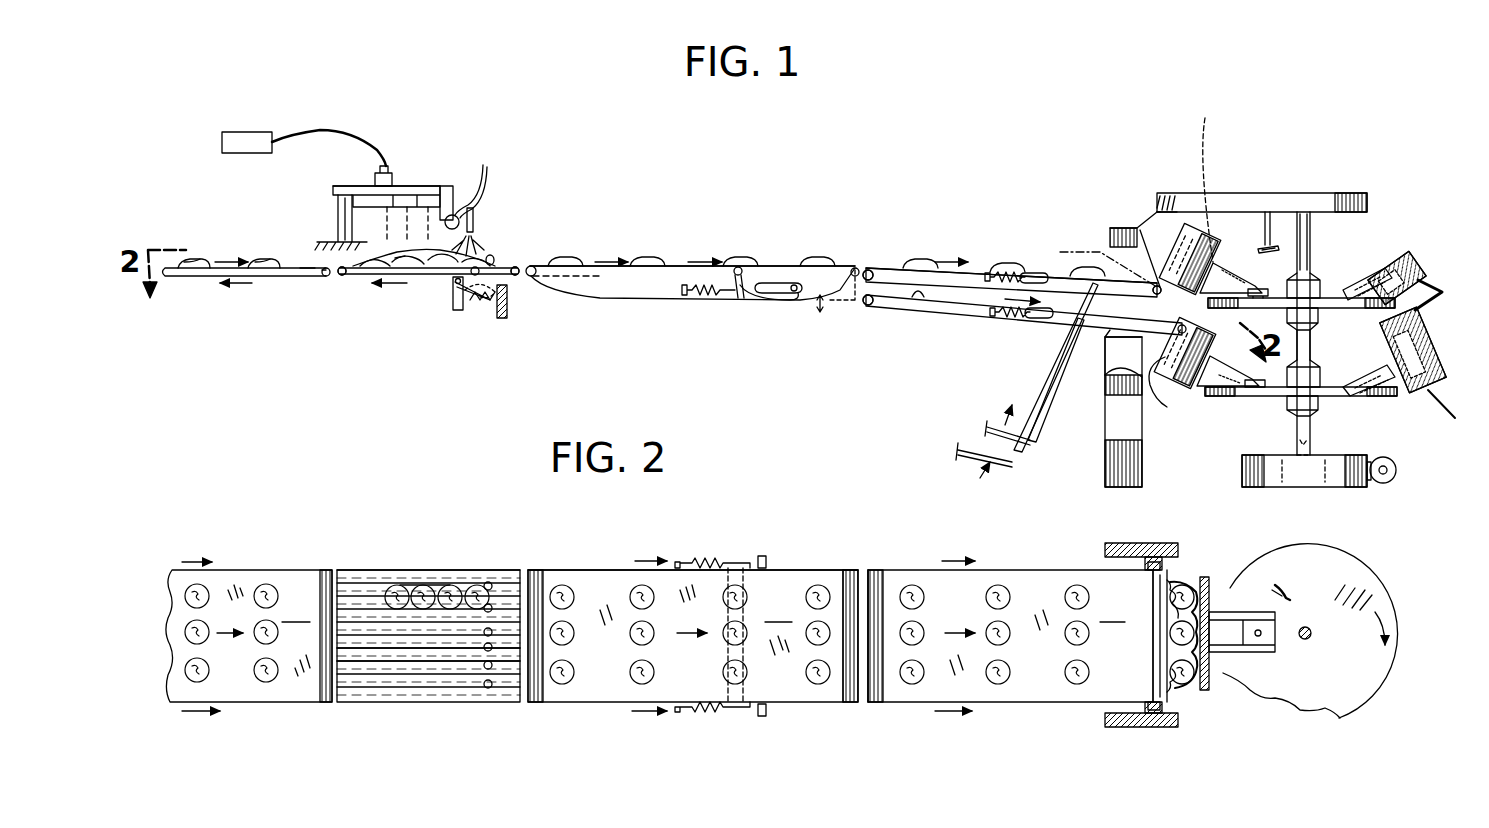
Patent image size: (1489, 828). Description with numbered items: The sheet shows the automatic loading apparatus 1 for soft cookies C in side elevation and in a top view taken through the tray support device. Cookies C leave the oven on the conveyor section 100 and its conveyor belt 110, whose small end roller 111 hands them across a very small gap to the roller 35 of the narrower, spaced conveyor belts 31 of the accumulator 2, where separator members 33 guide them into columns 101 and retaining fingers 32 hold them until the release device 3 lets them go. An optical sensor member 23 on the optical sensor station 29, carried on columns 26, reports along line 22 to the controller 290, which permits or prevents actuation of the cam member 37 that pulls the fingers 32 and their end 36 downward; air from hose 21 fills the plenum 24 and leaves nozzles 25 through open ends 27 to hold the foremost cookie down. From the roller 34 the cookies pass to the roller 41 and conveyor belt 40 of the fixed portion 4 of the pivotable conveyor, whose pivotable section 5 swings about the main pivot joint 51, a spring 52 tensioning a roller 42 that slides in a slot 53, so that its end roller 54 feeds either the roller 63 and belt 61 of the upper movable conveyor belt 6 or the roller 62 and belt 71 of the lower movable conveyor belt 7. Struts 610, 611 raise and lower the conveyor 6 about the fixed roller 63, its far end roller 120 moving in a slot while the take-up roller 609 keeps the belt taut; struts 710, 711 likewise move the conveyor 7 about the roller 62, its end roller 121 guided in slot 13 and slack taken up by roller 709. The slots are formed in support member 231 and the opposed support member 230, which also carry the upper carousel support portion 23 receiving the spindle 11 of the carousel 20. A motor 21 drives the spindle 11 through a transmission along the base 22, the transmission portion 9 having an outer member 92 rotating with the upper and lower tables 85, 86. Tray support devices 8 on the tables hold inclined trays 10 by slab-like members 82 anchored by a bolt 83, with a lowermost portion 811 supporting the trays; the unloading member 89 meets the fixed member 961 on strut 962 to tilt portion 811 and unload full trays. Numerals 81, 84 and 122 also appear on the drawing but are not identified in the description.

In FIG. 1, the automatic loading apparatus 1 is at (690, 152).
In FIG. 1, the accumulator 2 is at (418, 148).
In FIG. 1, the release device 3 is at (505, 255).
In FIG. 2, the release device 3 is at (481, 556).
In FIG. 1, the fixed portion of pivotable conveyor belt 4 is at (672, 245).
In FIG. 2, the fixed portion of pivotable conveyor belt 4 is at (623, 556).
In FIG. 2, the pivotable section 5 is at (806, 556).
In FIG. 1, the upper movable conveyor belt 6 is at (899, 243).
In FIG. 2, the upper movable conveyor belt 6 is at (927, 556).
In FIG. 1, the lower movable conveyor belt 7 is at (896, 325).
In FIG. 1, the tray support device 8 is at (1432, 242).
In FIG. 1, the transmission portion 9 is at (1318, 366).
In FIG. 1, the tray 10 is at (1428, 330).
In FIG. 1, the spindle 11 is at (1312, 225).
In FIG. 2, the spindle 11 is at (1313, 633).
In FIG. 1, the slot 13 is at (1167, 407).
In FIG. 2, the slot 13 is at (1148, 566).
In FIG. 1, the carousel 20 is at (1318, 175).
In FIG. 1, the motor (also air supply hose) 21 is at (484, 165).
In FIG. 1, the line (also carousel base) 22 is at (340, 132).
In FIG. 1, the optical sensor member (also upper carousel support portion) 23 is at (378, 173).
In FIG. 1, the plenum 24 is at (452, 188).
In FIG. 1, the nozzles 25 is at (474, 208).
In FIG. 1, the columns 26 is at (337, 212).
In FIG. 1, the nozzle open ends 27 is at (478, 234).
In FIG. 1, the optical sensor station 29 is at (352, 186).
In FIG. 2, the narrower conveyor belts 31 is at (465, 672).
In FIG. 1, the retaining fingers 32 is at (494, 258).
In FIG. 2, the retaining fingers 32 is at (491, 582).
In FIG. 1, the separator member 33 is at (398, 258).
In FIG. 2, the separator member 33 is at (352, 580).
In FIG. 1, the roller 34 is at (516, 277).
In FIG. 1, the conveyor belt roller 35 is at (342, 277).
In FIG. 1, the end of accumulator retaining portion 36 is at (458, 312).
In FIG. 1, the cam member 37 is at (471, 275).
In FIG. 1, the conveyor belt 40 is at (590, 266).
In FIG. 2, the conveyor belt 40 is at (778, 611).
In FIG. 1, the roller 41 is at (535, 280).
In FIG. 1, the roller 42 is at (770, 293).
In FIG. 2, the roller 42 is at (762, 556).
In FIG. 1, the main pivot joint 51 is at (737, 266).
In FIG. 2, the main pivot joint 51 is at (733, 567).
In FIG. 1, the spring 52 is at (700, 295).
In FIG. 2, the spring 52 is at (705, 560).
In FIG. 1, the slot 53 is at (786, 300).
In FIG. 1, the end roller 54 is at (855, 265).
In FIG. 2, the end roller 54 is at (852, 568).
In FIG. 1, the conveyor belt 61 is at (940, 268).
In FIG. 2, the conveyor belt 61 is at (1112, 611).
In FIG. 1, the roller 62 is at (868, 306).
In FIG. 1, the roller 63 is at (868, 268).
In FIG. 2, the roller 63 is at (876, 568).
In FIG. 1, the conveyor belt 71 is at (919, 300).
In FIG. 1, the pressing roller 81 is at (1192, 385).
In FIG. 2, the pressing roller 81 is at (1195, 585).
In FIG. 1, the slab-like members 82 is at (1215, 365).
In FIG. 2, the slab-like members 82 is at (1210, 600).
In FIG. 1, the bolt 83 is at (1262, 289).
In FIG. 2, the bolt 83 is at (1262, 630).
In FIG. 2, the arm 84 is at (1270, 645).
In FIG. 1, the upper carousel support surface 85 is at (1350, 308).
In FIG. 2, the upper carousel support surface 85 is at (1372, 692).
In FIG. 1, the lower carousel support surface 86 is at (1370, 396).
In FIG. 1, the unloading member 89 is at (1385, 266).
In FIG. 1, the outer member 92 is at (1318, 278).
In FIG. 1, the conveyor section 100 is at (170, 240).
In FIG. 2, the conveyor section 100 is at (248, 560).
In FIG. 2, the columns 101 is at (392, 587).
In FIG. 1, the conveyor belt 110 is at (300, 262).
In FIG. 2, the conveyor belt 110 is at (296, 611).
In FIG. 1, the end conveyor belt roller 111 is at (324, 280).
In FIG. 1, the far end roller 120 is at (1140, 228).
In FIG. 2, the far end roller 120 is at (1170, 575).
In FIG. 1, the end roller 121 is at (1120, 360).
In FIG. 1, the frame top 122 is at (1162, 196).
In FIG. 1, the opposing support member 230 is at (1145, 470).
In FIG. 2, the opposing support member 230 is at (1135, 727).
In FIG. 1, the support member 231 is at (1108, 230).
In FIG. 2, the support member 231 is at (1120, 543).
In FIG. 1, the controller 290 is at (248, 131).
In FIG. 1, the take-up roller 609 is at (1030, 272).
In FIG. 1, the strut 610 is at (1048, 410).
In FIG. 1, the strut 611 is at (1030, 445).
In FIG. 1, the movable roller 709 is at (1030, 318).
In FIG. 1, the strut 710 is at (1040, 395).
In FIG. 1, the strut 711 is at (962, 450).
In FIG. 1, the lowermost portion of tray support 811 is at (1432, 292).
In FIG. 1, the fixed member 961 is at (1265, 215).
In FIG. 2, the fixed member 961 is at (1290, 598).
In FIG. 1, the strut 962 is at (1270, 244).
In FIG. 2, the strut 962 is at (1282, 595).
In FIG. 1, the cookies C is at (195, 258).
In FIG. 2, the cookies C is at (185, 595).